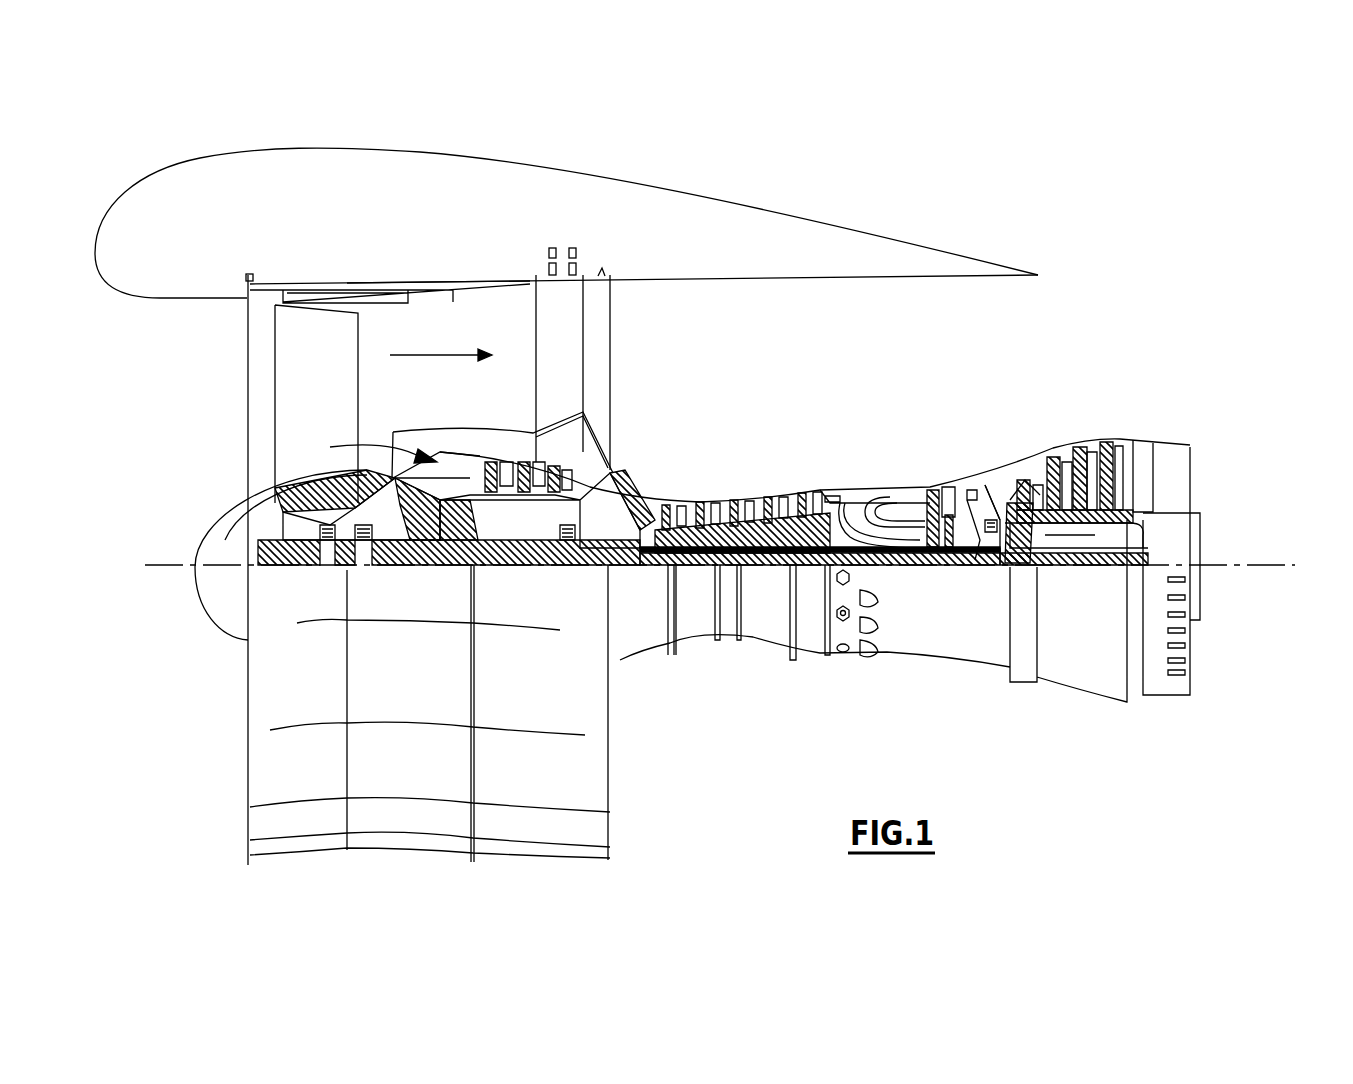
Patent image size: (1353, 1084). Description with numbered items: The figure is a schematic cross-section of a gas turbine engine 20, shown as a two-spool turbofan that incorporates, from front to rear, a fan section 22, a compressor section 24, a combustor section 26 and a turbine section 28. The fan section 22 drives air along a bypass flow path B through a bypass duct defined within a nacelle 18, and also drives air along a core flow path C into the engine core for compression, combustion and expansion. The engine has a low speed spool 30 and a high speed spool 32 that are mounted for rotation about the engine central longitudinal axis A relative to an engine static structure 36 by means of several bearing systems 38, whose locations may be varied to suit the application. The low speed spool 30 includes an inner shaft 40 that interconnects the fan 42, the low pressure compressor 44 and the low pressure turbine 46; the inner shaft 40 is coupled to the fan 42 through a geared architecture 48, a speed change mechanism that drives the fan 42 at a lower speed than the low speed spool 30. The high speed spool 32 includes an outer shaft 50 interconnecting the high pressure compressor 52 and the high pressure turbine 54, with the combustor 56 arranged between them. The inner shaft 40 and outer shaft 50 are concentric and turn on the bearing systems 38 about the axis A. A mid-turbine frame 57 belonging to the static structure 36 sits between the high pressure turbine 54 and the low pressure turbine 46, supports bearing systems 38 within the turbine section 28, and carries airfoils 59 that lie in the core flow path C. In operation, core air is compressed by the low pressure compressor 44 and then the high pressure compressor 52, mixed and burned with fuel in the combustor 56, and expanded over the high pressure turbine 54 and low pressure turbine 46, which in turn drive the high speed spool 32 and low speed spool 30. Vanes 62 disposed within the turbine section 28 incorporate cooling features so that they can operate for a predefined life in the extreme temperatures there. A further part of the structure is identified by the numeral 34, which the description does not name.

The nacelle 18 is at (565, 198).
The gas turbine engine 20 is at (1073, 204).
The fan section 22 is at (455, 254).
The compressor section 24 is at (868, 399).
The combustor section 26 is at (965, 399).
The turbine section 28 is at (1143, 399).
The low speed spool 30 is at (770, 575).
The high speed spool 32 is at (812, 500).
The turbine exhaust case 34 is at (1095, 535).
The engine static structure 36 is at (810, 660).
The bearing systems 38 is at (330, 565).
The inner shaft 40 is at (633, 565).
The fan 42 is at (333, 408).
The low pressure compressor 44 is at (548, 462).
The low pressure turbine 46 is at (1078, 440).
The geared architecture 48 is at (437, 565).
The outer shaft 50 is at (900, 565).
The high pressure compressor 52 is at (745, 500).
The high pressure turbine 54 is at (952, 487).
The combustor 56 is at (885, 498).
The mid-turbine frame 57 is at (990, 478).
The airfoils 59 is at (1015, 575).
The vanes 62 is at (948, 565).
The engine central longitudinal axis A is at (1280, 553).
The bypass flow path B is at (432, 355).
The core flow path C is at (373, 447).